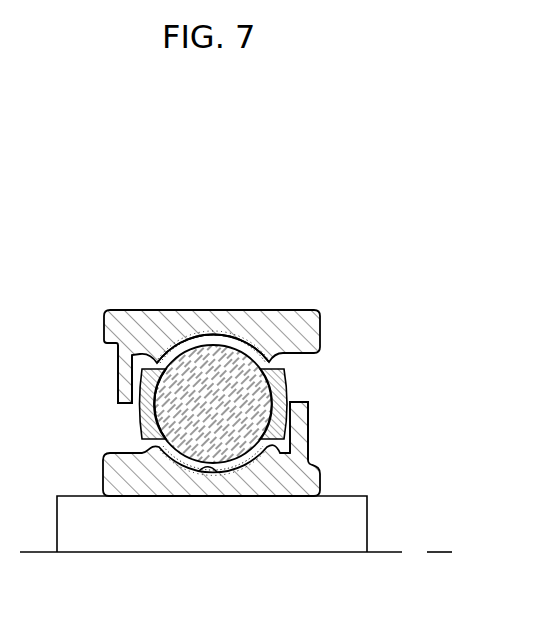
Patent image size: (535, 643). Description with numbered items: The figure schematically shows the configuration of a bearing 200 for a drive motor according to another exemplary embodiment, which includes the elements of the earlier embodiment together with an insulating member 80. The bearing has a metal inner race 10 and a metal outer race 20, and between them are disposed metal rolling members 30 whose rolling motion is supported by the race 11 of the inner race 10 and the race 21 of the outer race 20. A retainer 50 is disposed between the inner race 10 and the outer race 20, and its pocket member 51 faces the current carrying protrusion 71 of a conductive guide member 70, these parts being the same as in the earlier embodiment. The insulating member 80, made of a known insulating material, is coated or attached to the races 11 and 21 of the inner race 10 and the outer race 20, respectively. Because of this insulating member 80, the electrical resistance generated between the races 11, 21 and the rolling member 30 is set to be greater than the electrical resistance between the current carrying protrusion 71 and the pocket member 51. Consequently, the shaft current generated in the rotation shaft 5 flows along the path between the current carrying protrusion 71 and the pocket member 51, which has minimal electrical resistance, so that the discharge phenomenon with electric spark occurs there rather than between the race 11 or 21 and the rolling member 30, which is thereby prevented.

The bearing for the drive motor 200 is at (79, 248).
The rotation shaft 5 is at (315, 534).
The inner race 10 is at (255, 505).
The race 11 is at (200, 476).
The outer race 20 is at (249, 327).
The race 21 is at (186, 347).
The rolling member 30 is at (240, 362).
The retainer 50 is at (213, 398).
The pocket member 51 is at (145, 427).
The conductive guide member 70 is at (207, 399).
The current carrying protrusion 71 is at (127, 365).
The insulating member 80 is at (258, 358).